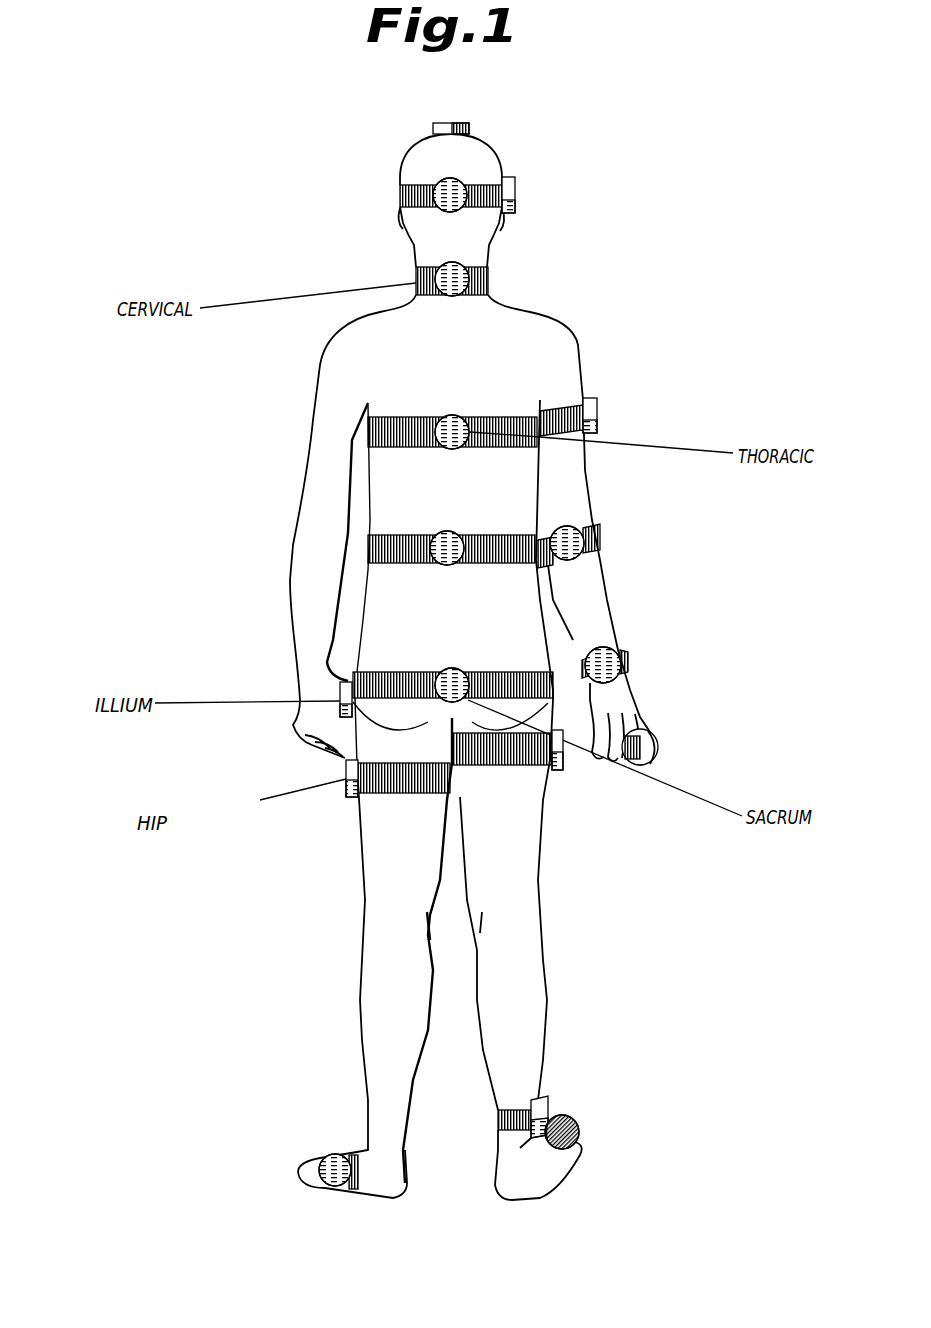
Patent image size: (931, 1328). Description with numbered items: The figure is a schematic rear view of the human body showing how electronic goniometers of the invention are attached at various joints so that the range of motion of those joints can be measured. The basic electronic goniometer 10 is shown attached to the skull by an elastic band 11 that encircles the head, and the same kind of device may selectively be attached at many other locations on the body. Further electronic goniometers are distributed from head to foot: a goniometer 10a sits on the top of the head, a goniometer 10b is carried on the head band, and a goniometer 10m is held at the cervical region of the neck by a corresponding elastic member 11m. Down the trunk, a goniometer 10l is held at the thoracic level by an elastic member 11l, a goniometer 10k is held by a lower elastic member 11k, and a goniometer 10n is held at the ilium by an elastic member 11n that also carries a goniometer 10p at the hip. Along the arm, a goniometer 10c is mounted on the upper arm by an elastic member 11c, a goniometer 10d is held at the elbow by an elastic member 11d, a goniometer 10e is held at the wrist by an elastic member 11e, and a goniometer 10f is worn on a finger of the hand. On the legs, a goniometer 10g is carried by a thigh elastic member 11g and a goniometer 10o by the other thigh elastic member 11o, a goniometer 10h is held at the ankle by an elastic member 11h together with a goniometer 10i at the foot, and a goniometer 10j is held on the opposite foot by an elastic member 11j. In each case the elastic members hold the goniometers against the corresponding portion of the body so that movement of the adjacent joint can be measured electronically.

The electronic goniometer 10 is at (437, 214).
The elastic band 11 is at (400, 191).
The electronic goniometer 10a is at (470, 128).
The electronic goniometer 10b is at (515, 188).
The electronic goniometer 10m is at (462, 265).
The elastic member 11m is at (488, 279).
The elastic member 11l is at (405, 417).
The electronic goniometer 10l is at (458, 416).
The elastic member 11c is at (560, 408).
The electronic goniometer 10c is at (596, 410).
The elastic member 11k is at (405, 533).
The electronic goniometer 10k is at (455, 531).
The elastic member 11d is at (598, 536).
The electronic goniometer 10d is at (580, 557).
The electronic goniometer 10e is at (610, 647).
The elastic member 11e is at (622, 665).
The electronic goniometer 10p is at (345, 681).
The elastic member 11n is at (398, 678).
The electronic goniometer 10n is at (455, 672).
The electronic goniometer 10f is at (655, 745).
The electronic goniometer 10g is at (563, 760).
The elastic member 11g is at (507, 765).
The electronic goniometer 10o is at (345, 798).
The elastic member 11o is at (398, 793).
The electronic goniometer 10h is at (546, 1104).
The electronic goniometer 10i is at (580, 1126).
The elastic member 11h is at (500, 1118).
The electronic goniometer 10j is at (328, 1176).
The elastic member 11j is at (353, 1192).